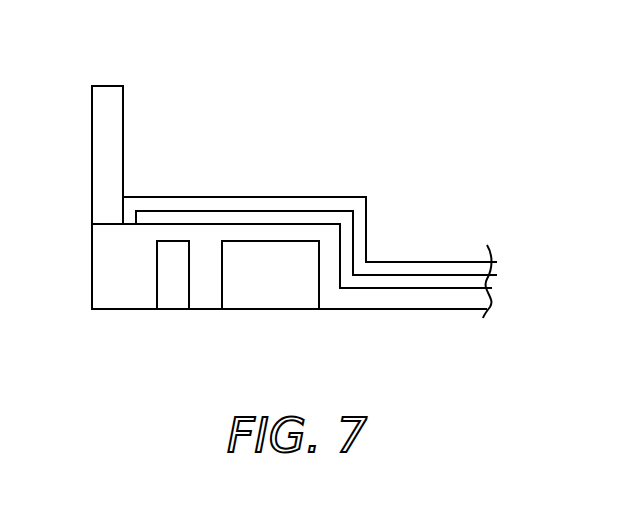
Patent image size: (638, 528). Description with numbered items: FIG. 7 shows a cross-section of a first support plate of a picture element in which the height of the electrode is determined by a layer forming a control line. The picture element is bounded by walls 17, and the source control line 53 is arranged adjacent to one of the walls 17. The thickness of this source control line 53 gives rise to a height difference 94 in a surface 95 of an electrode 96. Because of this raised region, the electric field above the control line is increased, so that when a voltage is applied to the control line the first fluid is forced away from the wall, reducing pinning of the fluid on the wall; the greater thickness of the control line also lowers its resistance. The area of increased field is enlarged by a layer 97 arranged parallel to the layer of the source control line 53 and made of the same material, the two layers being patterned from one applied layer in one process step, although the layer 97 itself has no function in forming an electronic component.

The walls 17 is at (92, 86).
The surface 95 is at (242, 210).
The electrode 96 is at (320, 218).
The height difference 94 is at (372, 210).
The source control line 53 is at (172, 299).
The layer 97 is at (265, 299).